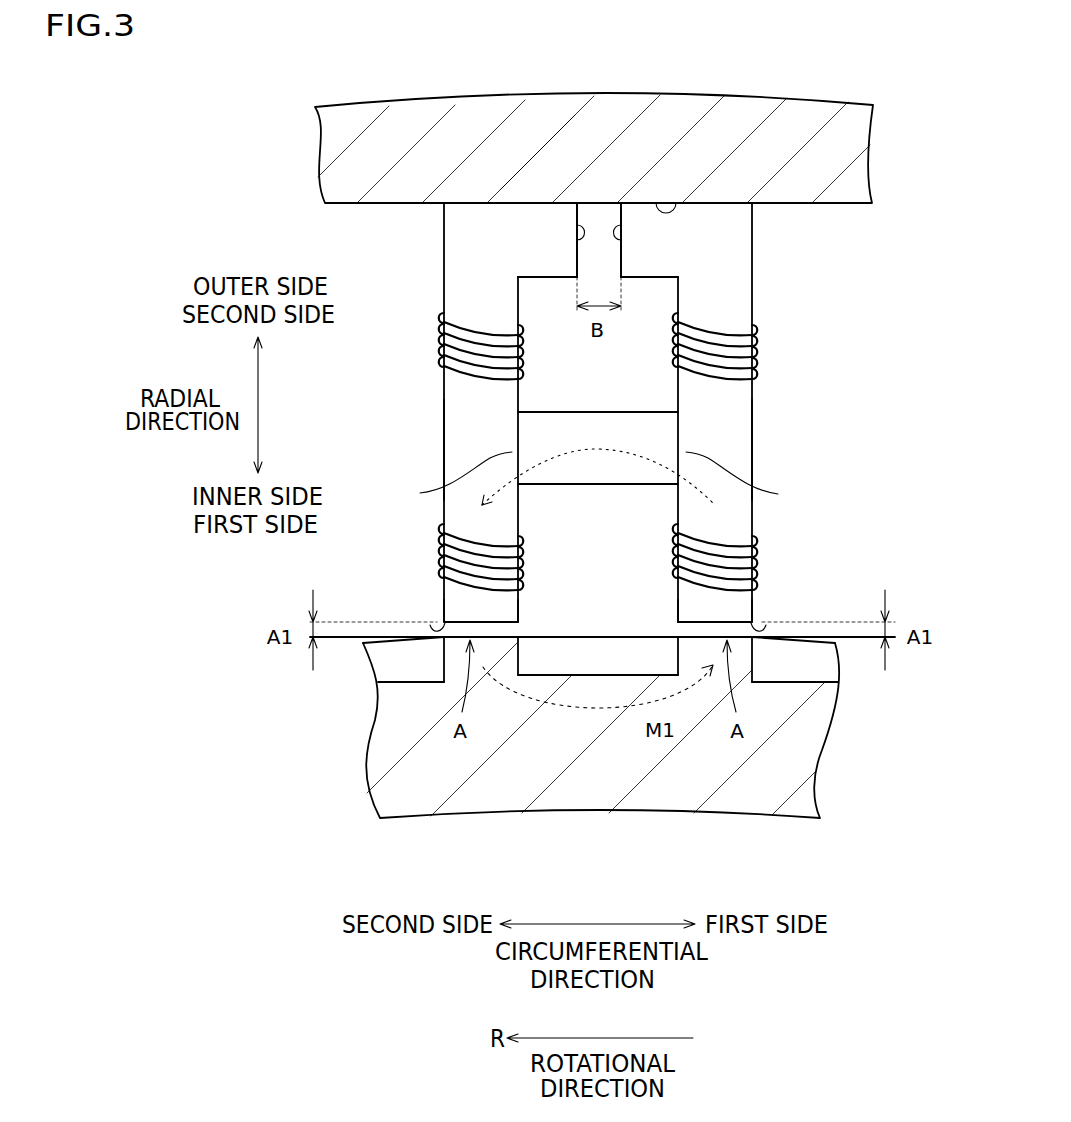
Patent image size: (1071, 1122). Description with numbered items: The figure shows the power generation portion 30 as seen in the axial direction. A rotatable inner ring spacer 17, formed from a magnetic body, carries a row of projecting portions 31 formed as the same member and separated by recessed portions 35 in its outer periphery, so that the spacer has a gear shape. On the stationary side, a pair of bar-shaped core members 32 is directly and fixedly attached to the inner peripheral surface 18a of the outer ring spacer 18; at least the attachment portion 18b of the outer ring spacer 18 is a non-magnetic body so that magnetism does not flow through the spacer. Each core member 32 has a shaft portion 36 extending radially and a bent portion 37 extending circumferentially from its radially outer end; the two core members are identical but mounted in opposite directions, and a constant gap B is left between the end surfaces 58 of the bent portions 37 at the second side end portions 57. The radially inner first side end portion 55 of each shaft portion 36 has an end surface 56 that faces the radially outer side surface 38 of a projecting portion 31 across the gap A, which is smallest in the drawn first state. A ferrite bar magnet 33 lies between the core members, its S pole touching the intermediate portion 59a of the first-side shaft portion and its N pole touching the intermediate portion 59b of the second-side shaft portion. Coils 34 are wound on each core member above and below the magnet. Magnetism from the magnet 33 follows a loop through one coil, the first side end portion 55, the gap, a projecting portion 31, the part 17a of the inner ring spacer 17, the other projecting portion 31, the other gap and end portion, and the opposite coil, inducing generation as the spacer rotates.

The inner ring spacer 17 is at (592, 790).
The part of the inner ring spacer 17a is at (597, 695).
The outer ring spacer 18 is at (608, 122).
The inner peripheral surface 18a is at (672, 203).
The attachment portion 18b is at (537, 175).
The power generation portion 30 is at (600, 418).
The projecting portion 31 is at (518, 653).
The core member 32 is at (444, 420).
The magnet 33 is at (600, 487).
The coil 34 is at (443, 348).
The recessed portion 35 is at (620, 625).
The shaft portion 36 is at (460, 450).
The bent portion 37 is at (549, 247).
The radially outer side surface 38 is at (500, 633).
The first side end portion 55 is at (457, 610).
The end surface 56 is at (430, 625).
The second side end portion 57 is at (598, 315).
The end surface of the bent portion 58 is at (577, 227).
The intermediate portion 59a is at (751, 478).
The intermediate portion 59b is at (548, 477).